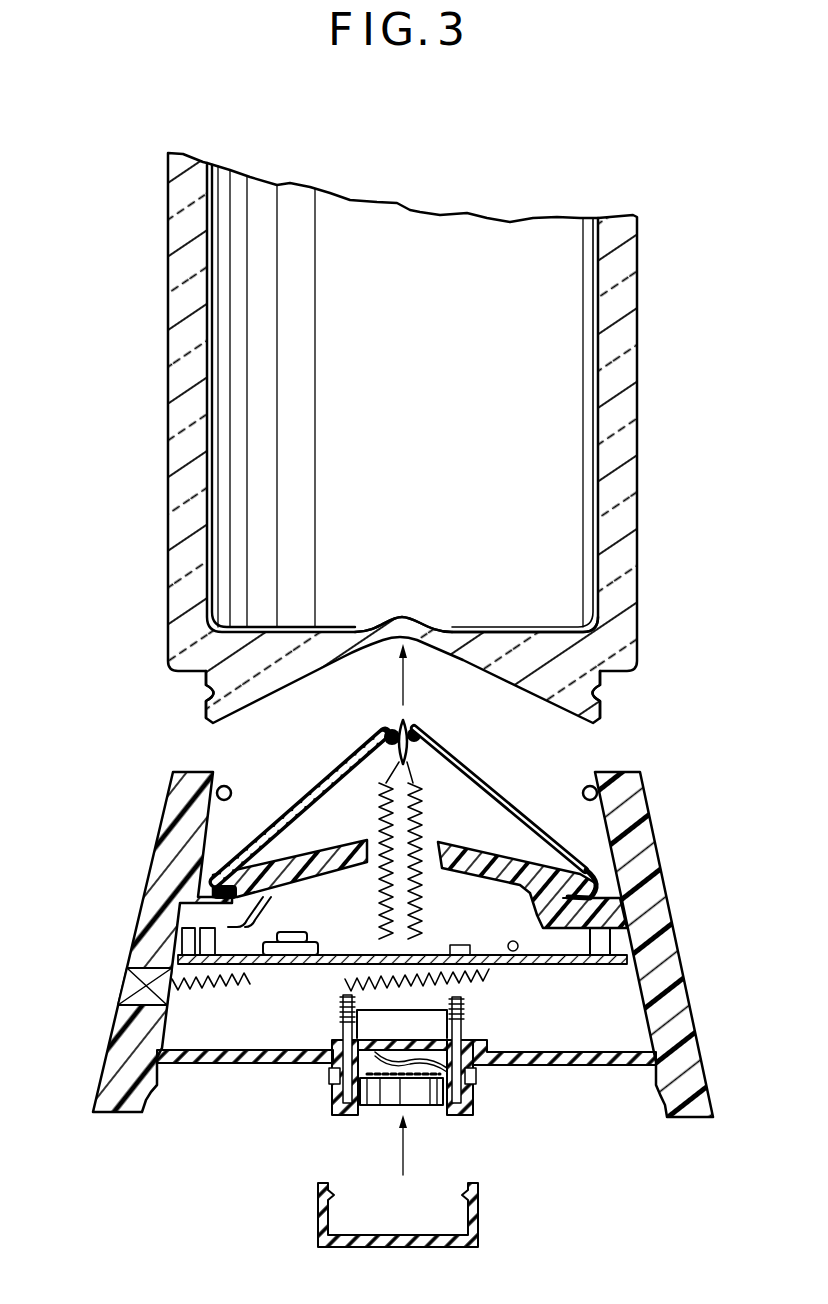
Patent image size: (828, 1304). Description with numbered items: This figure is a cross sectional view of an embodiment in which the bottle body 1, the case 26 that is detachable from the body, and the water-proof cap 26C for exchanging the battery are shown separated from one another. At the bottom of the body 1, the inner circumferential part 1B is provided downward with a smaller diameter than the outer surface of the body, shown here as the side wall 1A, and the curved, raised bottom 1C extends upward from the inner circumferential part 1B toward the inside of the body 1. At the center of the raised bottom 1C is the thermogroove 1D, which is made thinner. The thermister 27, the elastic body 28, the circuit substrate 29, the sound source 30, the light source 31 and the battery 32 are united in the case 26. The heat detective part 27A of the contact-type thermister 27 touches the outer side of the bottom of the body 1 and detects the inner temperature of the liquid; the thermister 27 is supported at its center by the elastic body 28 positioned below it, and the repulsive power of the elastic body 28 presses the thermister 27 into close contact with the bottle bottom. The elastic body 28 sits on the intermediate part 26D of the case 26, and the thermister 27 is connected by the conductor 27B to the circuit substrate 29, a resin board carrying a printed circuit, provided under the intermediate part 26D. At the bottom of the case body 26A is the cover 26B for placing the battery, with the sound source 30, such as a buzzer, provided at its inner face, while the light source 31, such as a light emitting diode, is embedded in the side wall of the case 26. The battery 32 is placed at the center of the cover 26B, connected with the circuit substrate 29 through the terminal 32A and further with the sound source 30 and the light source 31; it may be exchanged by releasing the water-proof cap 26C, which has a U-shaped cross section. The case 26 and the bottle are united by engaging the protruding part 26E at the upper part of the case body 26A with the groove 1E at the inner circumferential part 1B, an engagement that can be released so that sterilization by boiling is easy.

The body 1 is at (647, 335).
The side wall of container 1A is at (630, 434).
The inner circumferential part 1B is at (597, 707).
The raised bottom 1C is at (503, 632).
The thermogroove 1D is at (400, 617).
The groove 1E is at (210, 693).
The case 26 is at (662, 822).
The case body 26A is at (163, 846).
The cover 26B is at (577, 1066).
The water-proof cap 26C is at (480, 1222).
The intermediate part 26D is at (615, 897).
The protruding part 26E is at (225, 790).
The thermister 27 is at (395, 720).
The heat detective part 27A is at (407, 725).
The conductor 27B is at (408, 780).
The elastic body 28 is at (493, 792).
The circuit substrate 29 is at (535, 967).
The sound source 30 is at (341, 1012).
The light source 31 is at (127, 992).
The battery 32 is at (415, 1107).
The terminal 32A is at (372, 1017).